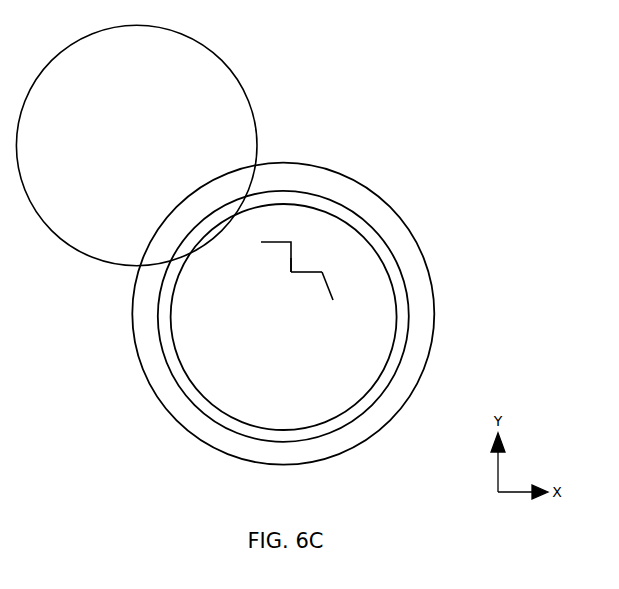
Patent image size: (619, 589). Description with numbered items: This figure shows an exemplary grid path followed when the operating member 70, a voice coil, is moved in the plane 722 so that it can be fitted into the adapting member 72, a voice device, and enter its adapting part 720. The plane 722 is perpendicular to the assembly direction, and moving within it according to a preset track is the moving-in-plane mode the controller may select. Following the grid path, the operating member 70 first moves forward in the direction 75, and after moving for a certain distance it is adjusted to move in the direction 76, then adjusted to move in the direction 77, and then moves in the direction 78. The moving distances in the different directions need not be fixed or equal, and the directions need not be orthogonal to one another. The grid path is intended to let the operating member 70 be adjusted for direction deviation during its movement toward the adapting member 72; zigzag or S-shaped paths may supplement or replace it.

The operating member 70 is at (218, 53).
The adapting member 72 is at (425, 372).
The adapting part 720 is at (332, 425).
The plane 722 is at (166, 390).
The direction 75 is at (282, 242).
The direction 76 is at (290, 248).
The direction 77 is at (322, 272).
The direction 78 is at (333, 300).